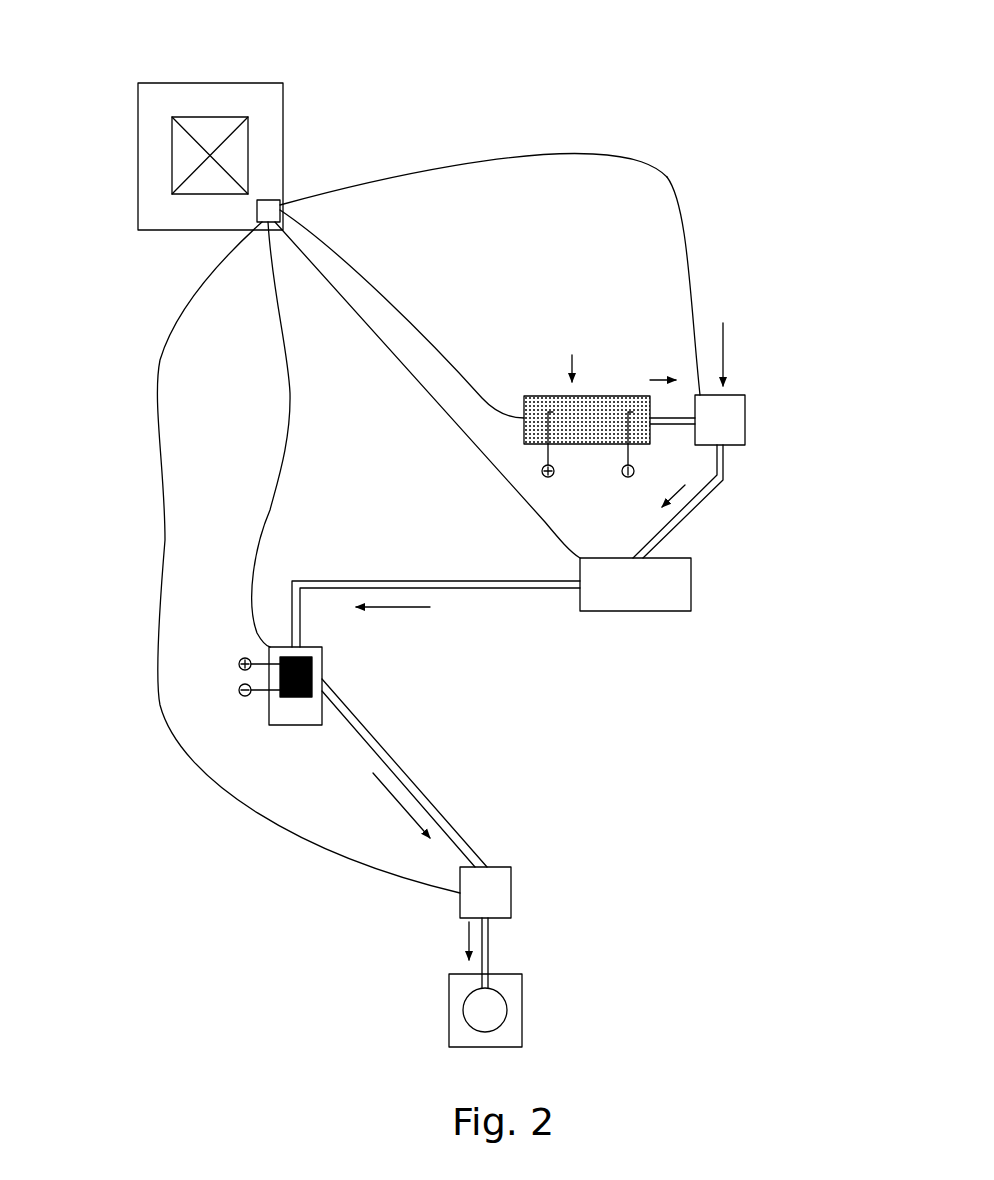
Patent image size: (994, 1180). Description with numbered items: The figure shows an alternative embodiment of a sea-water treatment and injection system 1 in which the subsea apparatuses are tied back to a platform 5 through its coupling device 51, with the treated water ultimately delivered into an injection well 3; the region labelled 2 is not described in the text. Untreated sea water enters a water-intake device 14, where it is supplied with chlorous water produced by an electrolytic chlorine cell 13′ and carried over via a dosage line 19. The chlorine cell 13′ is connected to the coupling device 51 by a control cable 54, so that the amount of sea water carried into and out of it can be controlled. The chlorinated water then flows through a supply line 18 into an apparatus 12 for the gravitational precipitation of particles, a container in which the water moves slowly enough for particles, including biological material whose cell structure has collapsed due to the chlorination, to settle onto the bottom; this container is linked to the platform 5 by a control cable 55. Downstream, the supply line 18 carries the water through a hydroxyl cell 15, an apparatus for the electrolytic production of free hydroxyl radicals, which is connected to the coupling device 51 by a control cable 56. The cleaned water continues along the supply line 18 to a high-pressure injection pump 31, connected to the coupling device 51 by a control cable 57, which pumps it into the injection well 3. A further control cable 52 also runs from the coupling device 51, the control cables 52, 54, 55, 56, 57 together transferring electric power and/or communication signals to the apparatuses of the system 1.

The system 1 is at (682, 120).
The patient 2 is at (236, 494).
The injection well 3 is at (485, 1010).
The platform 5 is at (283, 83).
The apparatus for the gravitational precipitation of particles 12 is at (691, 558).
The chlorine cell 13′ is at (592, 388).
The water-intake device 14 is at (748, 395).
The hydroxyl cell 15 is at (269, 725).
The supply line 18 is at (723, 477).
The dosage line 19 is at (673, 425).
The high-pressure injection pump 31 is at (511, 893).
The coupling device 51 is at (285, 204).
The control cable 52 is at (667, 177).
The control cable 54 is at (418, 310).
The control cable 55 is at (517, 513).
The control cable 56 is at (277, 470).
The control cable 57 is at (158, 705).